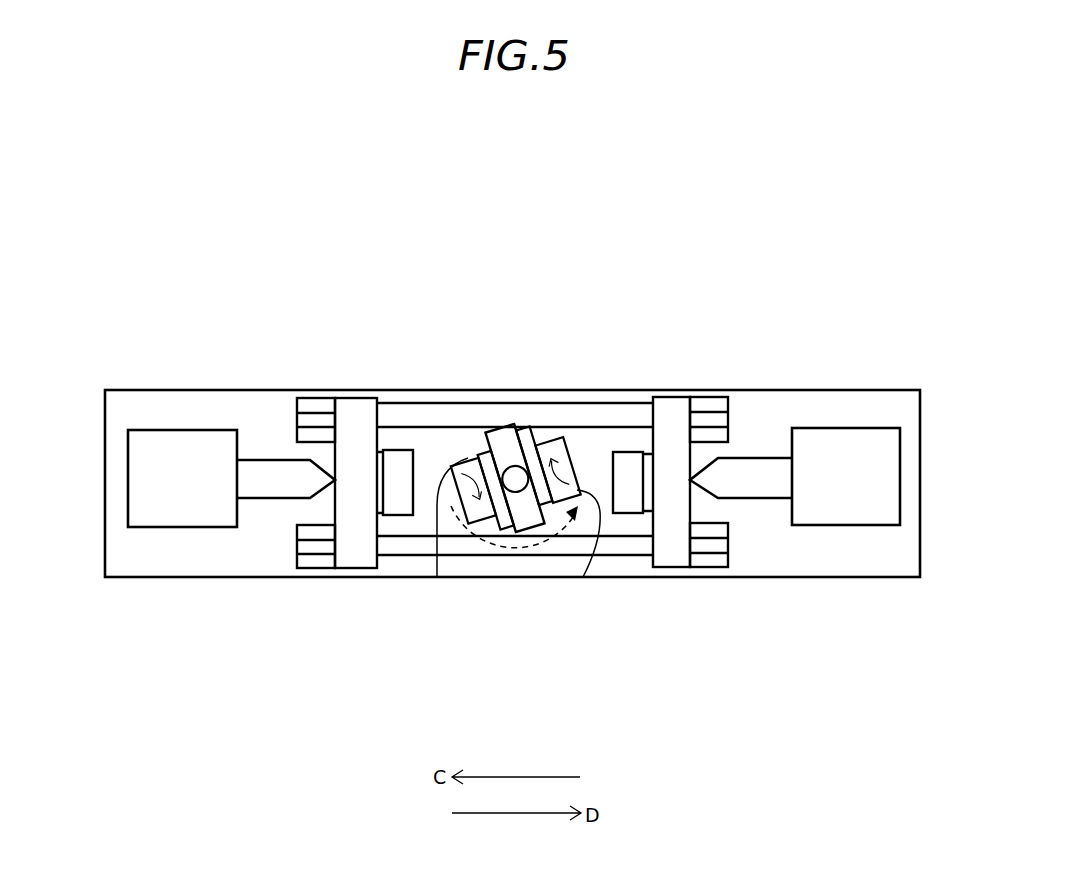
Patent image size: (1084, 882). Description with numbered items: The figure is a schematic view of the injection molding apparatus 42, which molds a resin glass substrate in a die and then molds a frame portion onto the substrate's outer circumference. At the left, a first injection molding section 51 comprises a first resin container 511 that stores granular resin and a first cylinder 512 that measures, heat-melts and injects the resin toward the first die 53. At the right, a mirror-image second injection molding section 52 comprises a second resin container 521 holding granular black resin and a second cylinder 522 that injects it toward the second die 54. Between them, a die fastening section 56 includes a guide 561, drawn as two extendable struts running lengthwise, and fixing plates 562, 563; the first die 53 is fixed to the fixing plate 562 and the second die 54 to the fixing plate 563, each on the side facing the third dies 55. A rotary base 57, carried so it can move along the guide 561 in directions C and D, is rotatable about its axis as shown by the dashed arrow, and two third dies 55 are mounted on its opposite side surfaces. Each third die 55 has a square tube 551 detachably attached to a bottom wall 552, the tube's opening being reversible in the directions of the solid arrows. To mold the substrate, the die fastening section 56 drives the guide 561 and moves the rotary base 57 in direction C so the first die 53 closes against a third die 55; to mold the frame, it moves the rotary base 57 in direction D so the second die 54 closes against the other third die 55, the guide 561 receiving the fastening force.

The injection molding apparatus 42 is at (810, 289).
The first injection molding section 51 is at (231, 463).
The first resin container 511 is at (158, 528).
The first cylinder 512 is at (272, 499).
The second injection molding section 52 is at (795, 478).
The second resin container 521 is at (850, 527).
The second cylinder 522 is at (773, 499).
The first die 53 is at (397, 463).
The second die 54 is at (633, 463).
The third die 55 is at (458, 446).
The die fastening section 56 is at (512, 467).
The guide 561 is at (603, 412).
The fixing plate 562 is at (355, 410).
The fixing plate 563 is at (668, 412).
The rotary base 57 is at (514, 421).
The square tube 551 is at (437, 577).
The bottom wall 552 is at (566, 542).